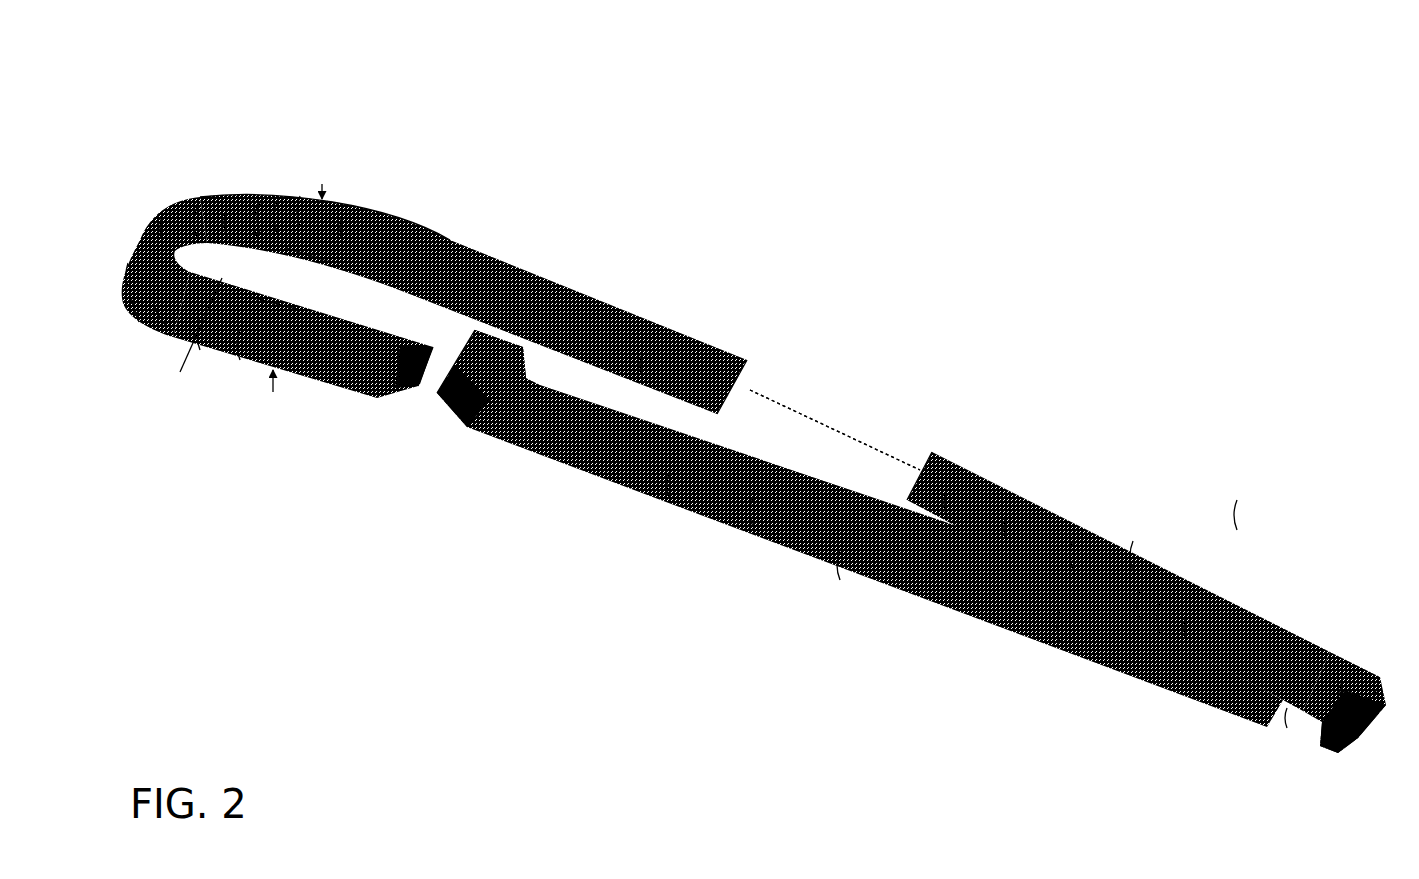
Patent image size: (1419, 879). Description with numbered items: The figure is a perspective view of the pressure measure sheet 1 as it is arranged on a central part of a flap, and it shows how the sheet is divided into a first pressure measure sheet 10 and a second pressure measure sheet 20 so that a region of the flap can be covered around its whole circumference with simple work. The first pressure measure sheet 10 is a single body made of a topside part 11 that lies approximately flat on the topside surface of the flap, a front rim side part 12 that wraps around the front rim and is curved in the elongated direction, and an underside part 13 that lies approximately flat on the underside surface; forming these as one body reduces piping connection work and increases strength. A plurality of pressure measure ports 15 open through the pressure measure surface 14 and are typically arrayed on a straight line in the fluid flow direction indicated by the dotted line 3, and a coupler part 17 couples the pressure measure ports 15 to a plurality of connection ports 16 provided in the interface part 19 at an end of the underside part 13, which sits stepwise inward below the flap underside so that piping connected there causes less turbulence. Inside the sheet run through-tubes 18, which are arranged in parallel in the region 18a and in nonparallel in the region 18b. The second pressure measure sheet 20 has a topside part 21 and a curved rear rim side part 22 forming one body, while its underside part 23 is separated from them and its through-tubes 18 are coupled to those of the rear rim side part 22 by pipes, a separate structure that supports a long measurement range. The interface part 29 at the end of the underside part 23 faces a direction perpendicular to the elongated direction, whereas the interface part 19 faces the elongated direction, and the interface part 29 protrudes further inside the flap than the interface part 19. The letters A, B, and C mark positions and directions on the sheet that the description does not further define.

The pressure measure sheet 1 is at (878, 247).
The dotted line 3 is at (821, 412).
The first pressure measure sheet 10 is at (484, 192).
The topside part 11 is at (549, 267).
The front rim side part 12 is at (107, 247).
The underside part 13 is at (289, 425).
The pressure measure surface 14 is at (347, 396).
The pressure measure ports 15 is at (163, 213).
The connection ports 16 is at (420, 392).
The coupler part 17 is at (336, 102).
The through-tubes 18 is at (260, 203).
The region 18a is at (304, 311).
The region 18b is at (287, 248).
The interface part 19 is at (393, 392).
The second pressure measure sheet 20 is at (1149, 445).
The topside part 21 is at (1133, 541).
The rear rim side part 22 is at (1374, 731).
The underside part 23 is at (956, 632).
The interface part 29 is at (453, 410).
The section line A- A is at (190, 310).
The direction B is at (272, 395).
The direction C is at (322, 176).